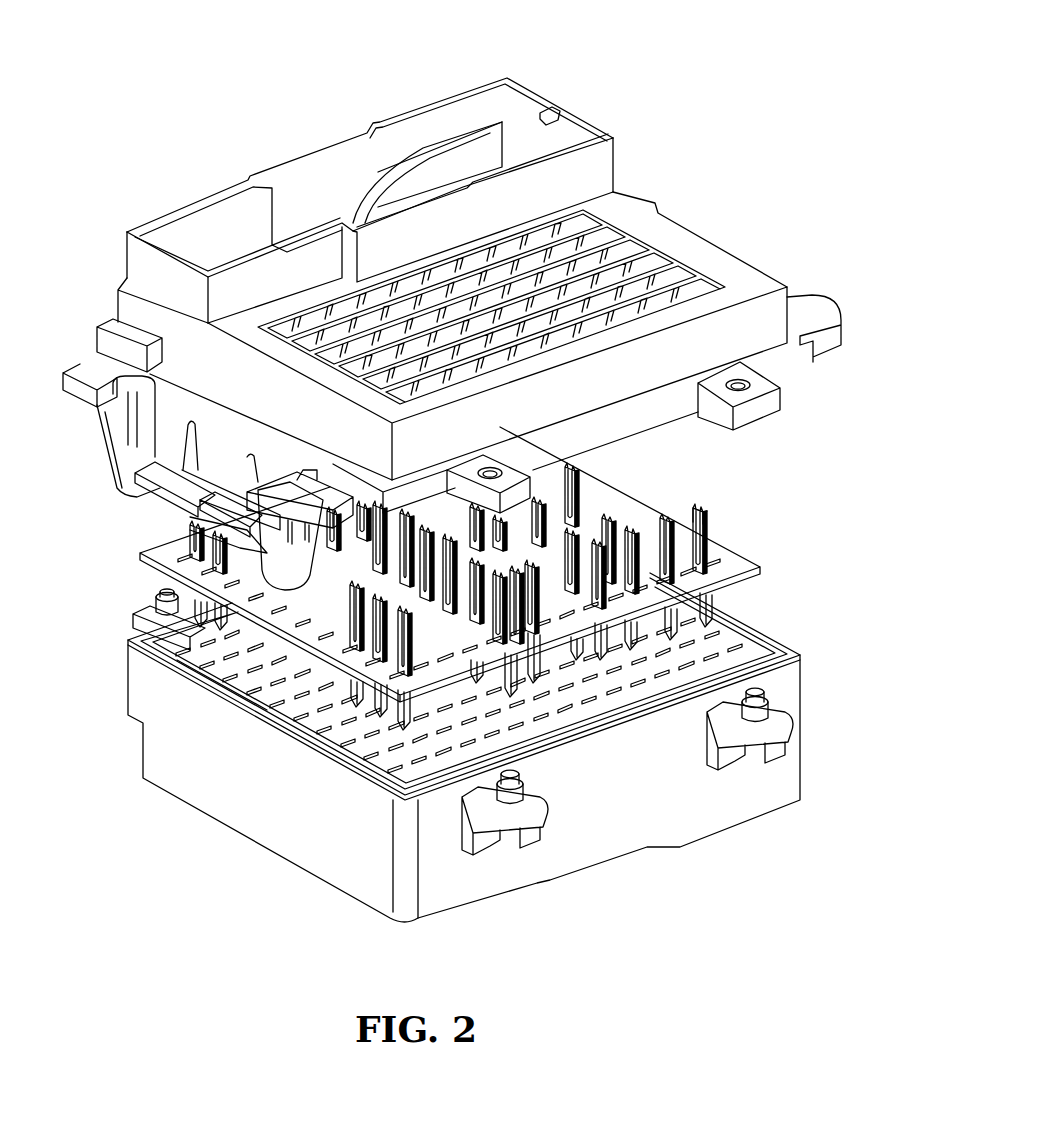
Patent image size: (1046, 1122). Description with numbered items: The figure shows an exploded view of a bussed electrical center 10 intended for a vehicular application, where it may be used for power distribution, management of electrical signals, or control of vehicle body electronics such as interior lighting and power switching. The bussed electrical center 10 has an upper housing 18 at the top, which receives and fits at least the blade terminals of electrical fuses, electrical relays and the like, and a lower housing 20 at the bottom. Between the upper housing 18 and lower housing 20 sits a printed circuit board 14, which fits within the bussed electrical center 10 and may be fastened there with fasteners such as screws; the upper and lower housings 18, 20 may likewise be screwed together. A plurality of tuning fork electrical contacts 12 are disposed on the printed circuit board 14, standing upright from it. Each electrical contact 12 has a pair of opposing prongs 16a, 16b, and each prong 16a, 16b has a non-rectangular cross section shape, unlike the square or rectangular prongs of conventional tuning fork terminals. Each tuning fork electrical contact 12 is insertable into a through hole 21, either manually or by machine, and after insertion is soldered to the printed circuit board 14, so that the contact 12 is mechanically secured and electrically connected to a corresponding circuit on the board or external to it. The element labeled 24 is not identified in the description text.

The bussed electrical center 10 is at (655, 93).
The tuning fork electrical contact 12 is at (768, 528).
The printed circuit board 14 is at (157, 552).
The prong 16a is at (707, 510).
The prong 16b is at (713, 533).
The upper housing 18 is at (730, 252).
The lower housing 20 is at (795, 681).
The through hole 21 is at (316, 617).
The terminal pin 24 is at (707, 600).